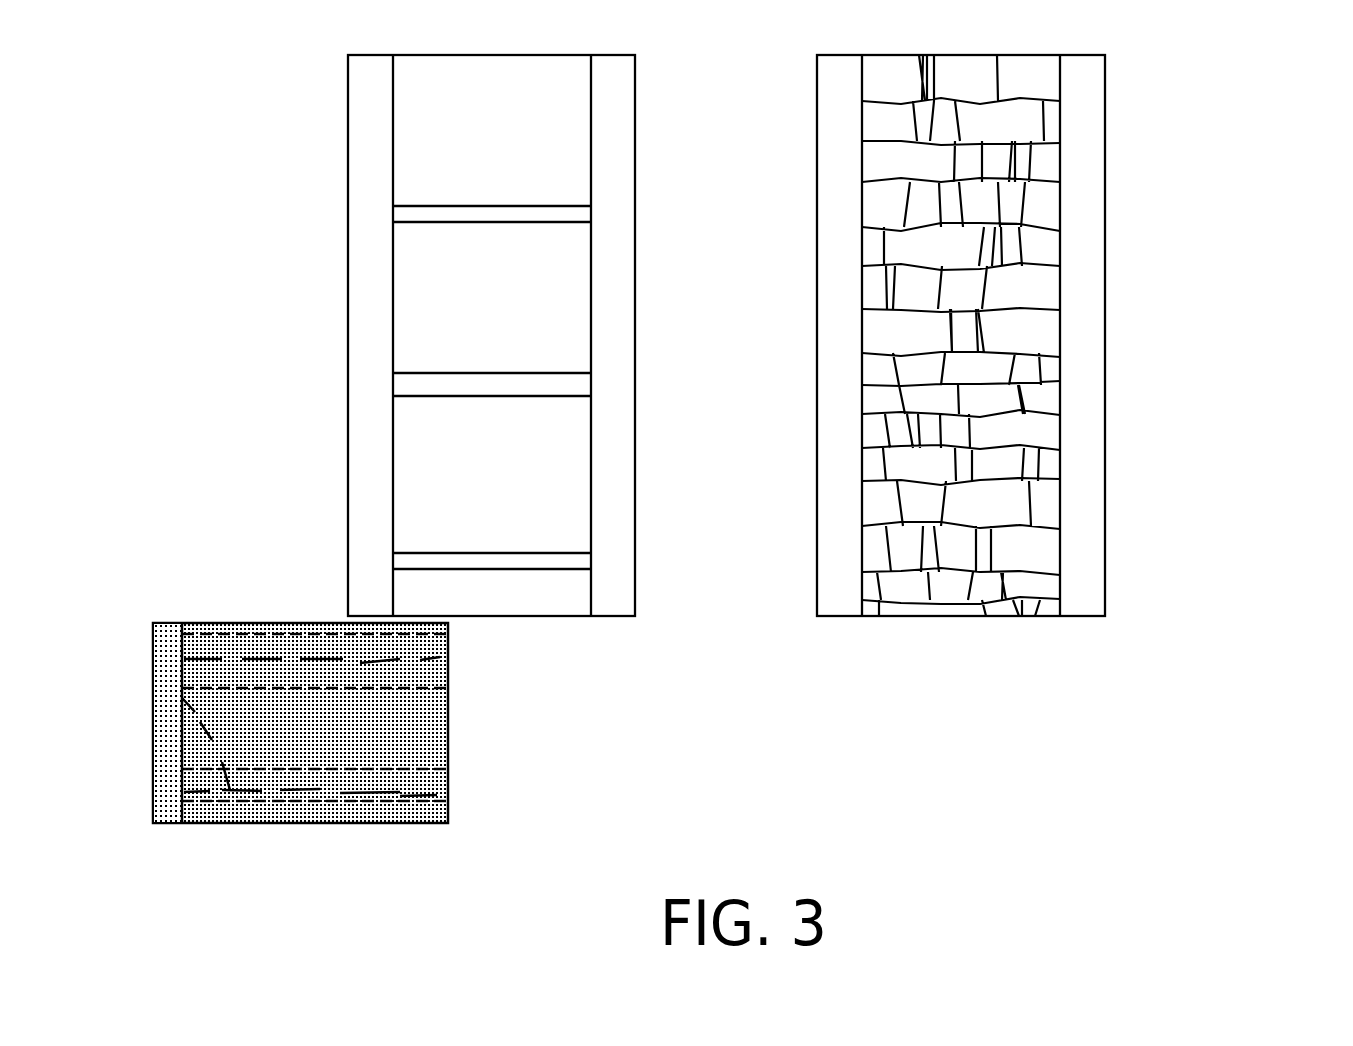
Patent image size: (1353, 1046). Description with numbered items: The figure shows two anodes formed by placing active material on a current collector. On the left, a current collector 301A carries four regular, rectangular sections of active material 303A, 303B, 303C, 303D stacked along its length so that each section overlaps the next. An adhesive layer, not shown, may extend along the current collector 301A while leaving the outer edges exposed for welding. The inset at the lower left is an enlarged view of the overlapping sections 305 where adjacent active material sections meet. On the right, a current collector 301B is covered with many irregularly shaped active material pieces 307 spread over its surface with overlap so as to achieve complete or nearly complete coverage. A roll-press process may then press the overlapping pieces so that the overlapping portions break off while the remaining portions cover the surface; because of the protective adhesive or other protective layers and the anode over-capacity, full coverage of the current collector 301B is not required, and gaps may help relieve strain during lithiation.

The current collector 301A is at (348, 146).
The current collector 301B is at (1105, 160).
The active material section 303A is at (591, 127).
The active material section 303B is at (591, 305).
The active material section 303C is at (591, 440).
The active material section 303D is at (591, 588).
The overlapping sections 305 is at (416, 552).
The active material pieces 307 is at (1013, 448).